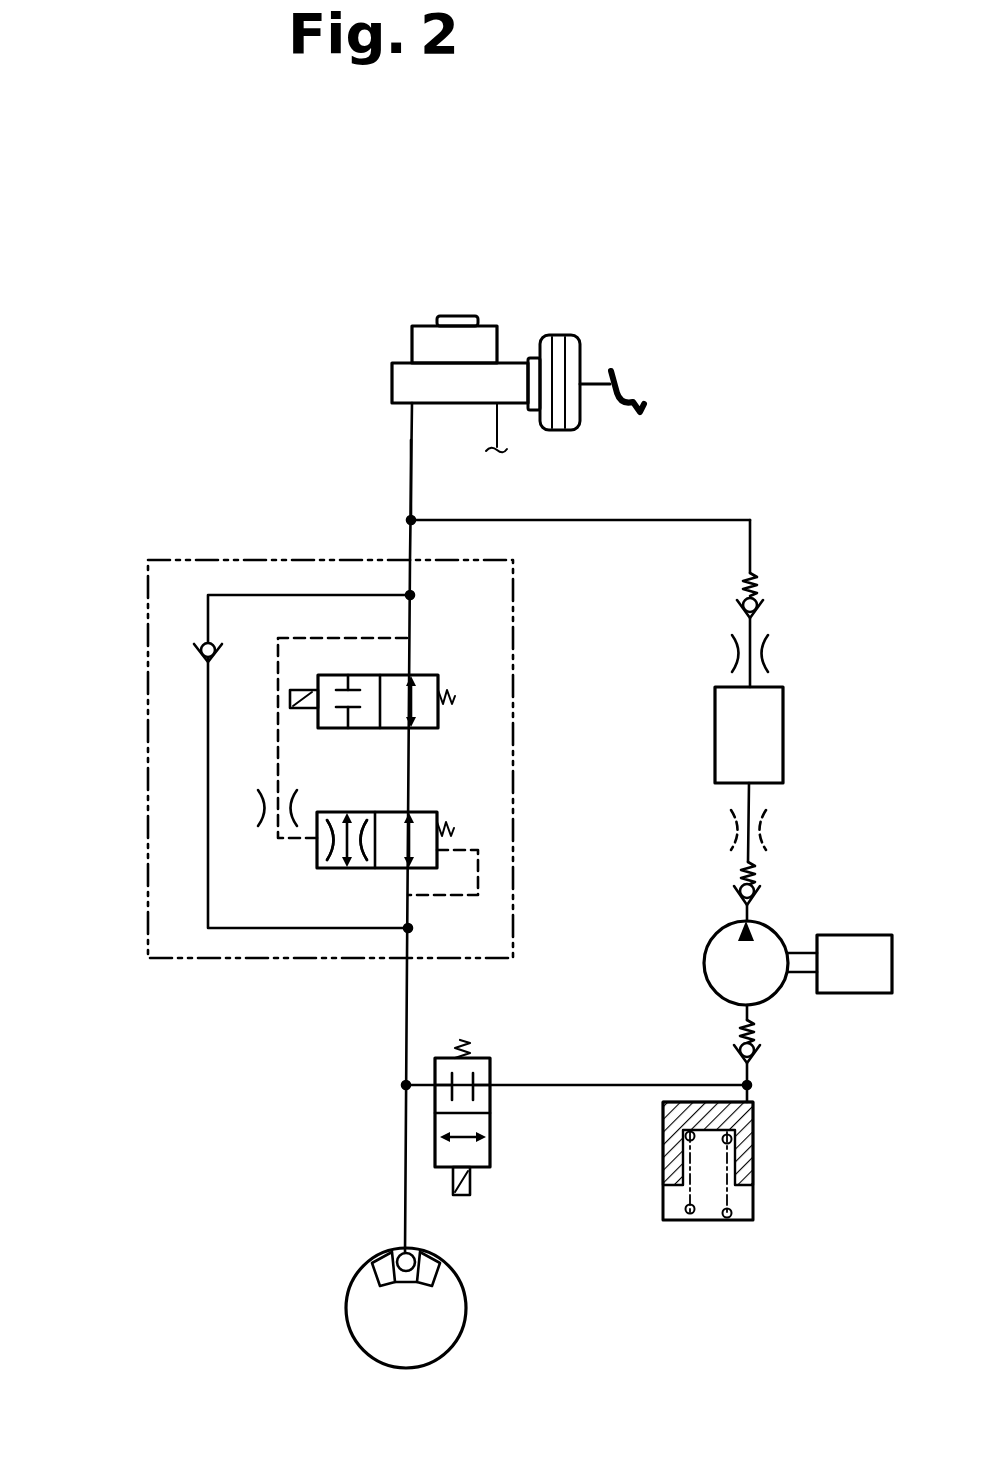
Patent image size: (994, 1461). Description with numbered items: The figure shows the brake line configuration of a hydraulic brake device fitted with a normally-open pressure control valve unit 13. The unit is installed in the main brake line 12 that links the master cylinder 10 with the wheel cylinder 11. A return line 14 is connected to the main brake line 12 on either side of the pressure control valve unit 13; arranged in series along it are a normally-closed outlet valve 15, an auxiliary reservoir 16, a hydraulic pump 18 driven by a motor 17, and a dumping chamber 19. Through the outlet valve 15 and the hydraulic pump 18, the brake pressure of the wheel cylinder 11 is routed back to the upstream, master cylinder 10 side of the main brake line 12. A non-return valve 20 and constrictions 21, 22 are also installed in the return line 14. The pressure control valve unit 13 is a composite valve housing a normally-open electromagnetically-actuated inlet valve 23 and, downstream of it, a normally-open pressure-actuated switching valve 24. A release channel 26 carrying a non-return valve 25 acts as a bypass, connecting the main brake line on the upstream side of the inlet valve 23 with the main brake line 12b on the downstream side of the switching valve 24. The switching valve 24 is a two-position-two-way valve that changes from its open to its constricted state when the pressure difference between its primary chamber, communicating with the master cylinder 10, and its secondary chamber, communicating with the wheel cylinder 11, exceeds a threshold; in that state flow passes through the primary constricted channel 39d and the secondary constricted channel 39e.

The master cylinder 10 is at (513, 370).
The wheel cylinder 11 is at (400, 1255).
The main brake line 12 is at (412, 483).
The main brake line downstream portion 12b is at (405, 1003).
The pressure control valve unit 13 is at (162, 548).
The return line 14 is at (599, 1083).
The outlet valve 15 is at (490, 1170).
The auxiliary reservoir 16 is at (755, 1166).
The motor 17 is at (866, 935).
The hydraulic pump 18 is at (766, 925).
The dumping chamber 19 is at (785, 716).
The non-return valve 20 is at (763, 601).
The constriction 21 is at (728, 826).
The constriction 22 is at (735, 650).
The inlet valve 23 is at (318, 683).
The switching valve 24 is at (330, 868).
The non-return valve 25 is at (199, 648).
The release channel 26 is at (208, 607).
The primary constricted channel 39d is at (318, 852).
The secondary constricted channel 39e is at (259, 799).